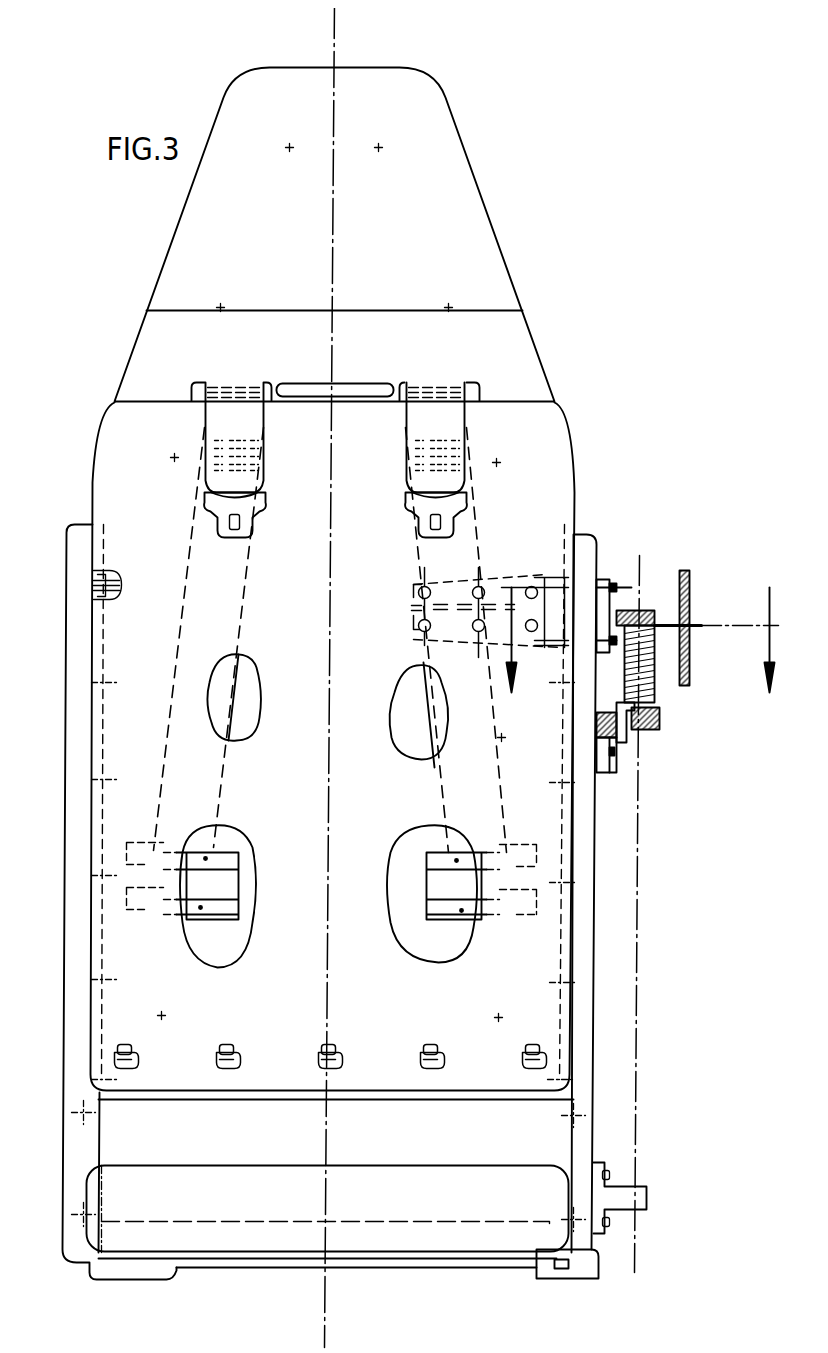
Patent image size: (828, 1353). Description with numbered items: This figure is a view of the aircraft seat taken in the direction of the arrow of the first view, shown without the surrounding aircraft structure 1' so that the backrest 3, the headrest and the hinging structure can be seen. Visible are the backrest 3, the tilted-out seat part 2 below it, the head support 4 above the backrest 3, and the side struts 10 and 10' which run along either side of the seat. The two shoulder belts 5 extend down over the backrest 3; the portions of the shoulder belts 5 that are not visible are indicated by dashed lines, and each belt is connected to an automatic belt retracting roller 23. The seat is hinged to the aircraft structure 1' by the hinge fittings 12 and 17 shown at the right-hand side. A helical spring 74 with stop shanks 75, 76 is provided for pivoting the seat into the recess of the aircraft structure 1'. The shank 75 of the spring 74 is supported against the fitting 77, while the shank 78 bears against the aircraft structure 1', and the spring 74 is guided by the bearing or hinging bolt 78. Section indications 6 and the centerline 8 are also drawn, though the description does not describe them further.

The aircraft structure 1' is at (717, 613).
The seat part 2 is at (413, 1208).
The backrest 3 is at (368, 563).
The head support 4 is at (433, 245).
The shoulder belts 5 is at (220, 418).
The section line 6 is at (641, 648).
The axis 8 is at (637, 1002).
The side strut 10 is at (102, 902).
The side strut 10' is at (615, 907).
The hinge fitting 12 is at (592, 577).
The hinge fitting 17 is at (643, 1190).
The automatic belt retracting roller 23 is at (223, 913).
The helical spring 74 is at (655, 690).
The stop shank 75 is at (622, 732).
The stop shank 76 is at (656, 605).
The fitting 77 is at (602, 766).
The hinging bolt 78 is at (645, 728).